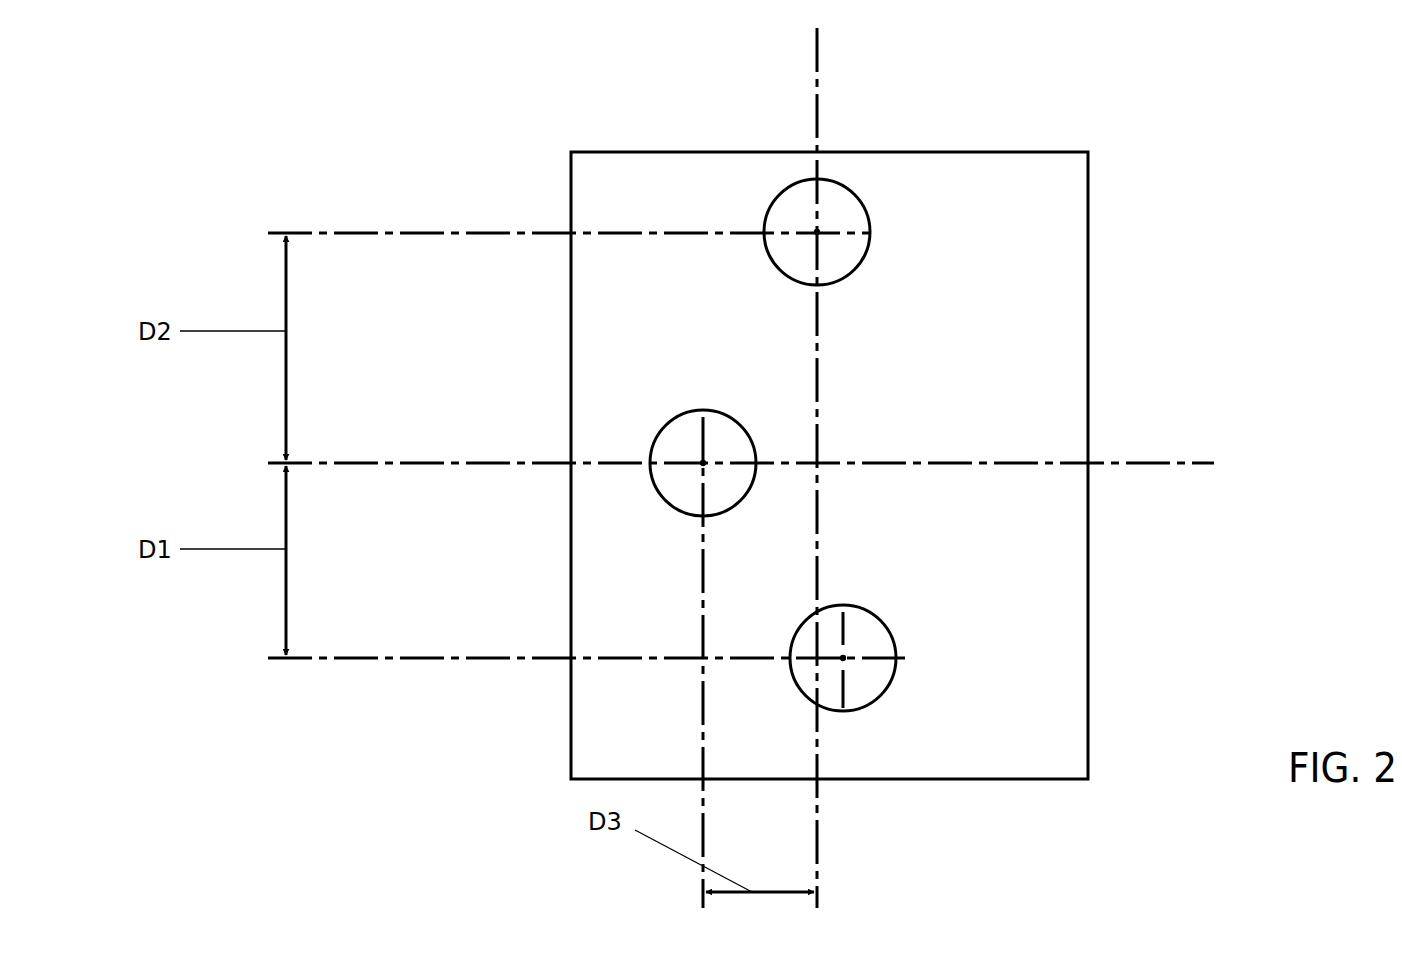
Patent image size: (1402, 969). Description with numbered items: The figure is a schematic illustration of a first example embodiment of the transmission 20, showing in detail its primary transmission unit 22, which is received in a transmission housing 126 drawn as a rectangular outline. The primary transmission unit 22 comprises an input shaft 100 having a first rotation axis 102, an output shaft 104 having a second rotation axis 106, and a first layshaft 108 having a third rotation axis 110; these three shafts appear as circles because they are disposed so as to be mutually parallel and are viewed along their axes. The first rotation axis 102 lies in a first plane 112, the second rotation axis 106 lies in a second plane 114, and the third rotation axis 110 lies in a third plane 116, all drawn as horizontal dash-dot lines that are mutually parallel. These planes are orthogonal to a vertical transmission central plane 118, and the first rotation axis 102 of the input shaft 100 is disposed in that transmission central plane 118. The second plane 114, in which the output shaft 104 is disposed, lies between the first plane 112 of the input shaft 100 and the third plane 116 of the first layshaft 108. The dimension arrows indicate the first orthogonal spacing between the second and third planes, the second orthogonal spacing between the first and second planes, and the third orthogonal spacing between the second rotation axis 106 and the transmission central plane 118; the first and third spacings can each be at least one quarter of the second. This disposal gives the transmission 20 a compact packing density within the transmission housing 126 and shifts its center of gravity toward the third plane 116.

The transmission 20 is at (963, 421).
The primary transmission unit 22 is at (963, 421).
The input shaft 100 is at (835, 217).
The first rotation axis 102 is at (818, 230).
The output shaft 104 is at (690, 435).
The second rotation axis 106 is at (703, 463).
The first layshaft 108 is at (865, 632).
The third rotation axis 110 is at (845, 660).
The first plane 112 is at (497, 232).
The second plane 114 is at (1188, 462).
The third plane 116 is at (500, 660).
The transmission central plane 118 is at (817, 38).
The transmission housing 126 is at (1090, 327).